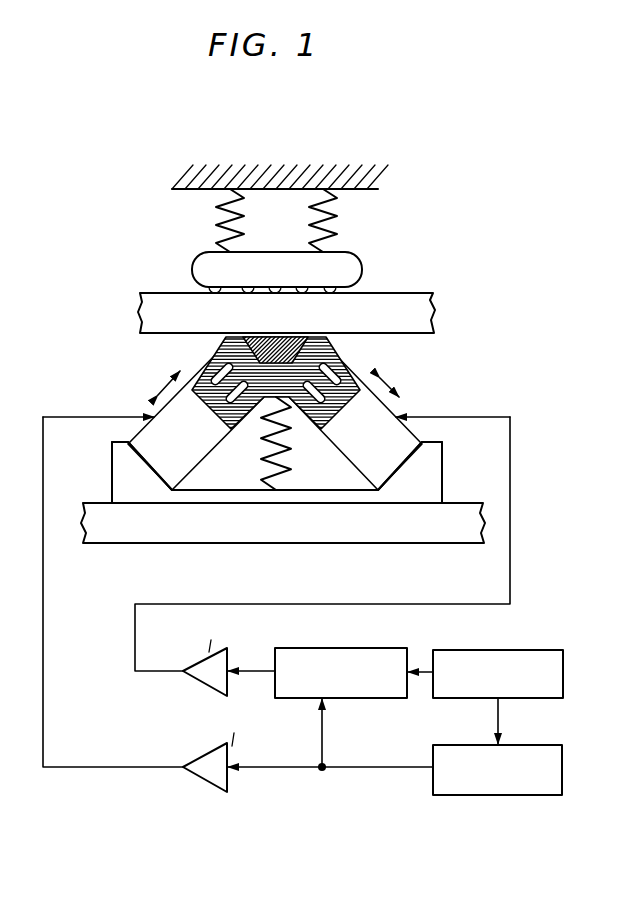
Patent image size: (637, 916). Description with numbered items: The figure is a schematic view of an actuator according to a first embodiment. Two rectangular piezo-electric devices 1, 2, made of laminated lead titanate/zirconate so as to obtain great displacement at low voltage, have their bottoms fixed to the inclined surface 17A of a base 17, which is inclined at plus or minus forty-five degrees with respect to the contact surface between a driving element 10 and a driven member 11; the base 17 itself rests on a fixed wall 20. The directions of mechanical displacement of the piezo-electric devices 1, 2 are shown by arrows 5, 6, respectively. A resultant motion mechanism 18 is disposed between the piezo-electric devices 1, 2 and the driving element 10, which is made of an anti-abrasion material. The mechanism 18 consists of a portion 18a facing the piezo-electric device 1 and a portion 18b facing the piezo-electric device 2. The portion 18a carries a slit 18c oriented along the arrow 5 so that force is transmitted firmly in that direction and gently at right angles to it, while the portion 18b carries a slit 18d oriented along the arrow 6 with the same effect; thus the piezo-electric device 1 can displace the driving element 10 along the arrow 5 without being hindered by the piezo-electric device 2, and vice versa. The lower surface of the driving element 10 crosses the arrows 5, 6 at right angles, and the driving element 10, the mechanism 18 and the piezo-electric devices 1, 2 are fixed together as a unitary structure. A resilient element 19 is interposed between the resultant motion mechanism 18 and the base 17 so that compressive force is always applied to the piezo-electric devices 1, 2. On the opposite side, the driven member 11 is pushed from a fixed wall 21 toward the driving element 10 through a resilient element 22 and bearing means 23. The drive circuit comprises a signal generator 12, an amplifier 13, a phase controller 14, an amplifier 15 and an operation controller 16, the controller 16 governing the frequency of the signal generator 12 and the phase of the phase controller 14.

The piezo-electric device 1 is at (178, 427).
The piezo-electric device 2 is at (380, 418).
The arrow 5 is at (157, 379).
The arrow 6 is at (397, 390).
The driving element 10 is at (255, 340).
The driven member 11 is at (390, 302).
The signal generator 12 is at (545, 745).
The amplifier 13 is at (198, 760).
The phase controller 14 is at (360, 648).
The amplifier 15 is at (198, 665).
The operation controller 16 is at (525, 650).
The base 17 is at (430, 478).
The inclined surface 17A is at (418, 443).
The resultant motion mechanism 18 is at (335, 352).
The portion of resultant motion mechanism 18a is at (207, 370).
The portion of resultant motion mechanism 18b is at (345, 361).
The slit 18c is at (210, 374).
The slit 18d is at (352, 373).
The resilient element 19 is at (292, 423).
The fixed wall 20 is at (455, 535).
The fixed wall 21 is at (357, 173).
The resilient element 22 is at (337, 223).
The bearing means 23 is at (360, 260).